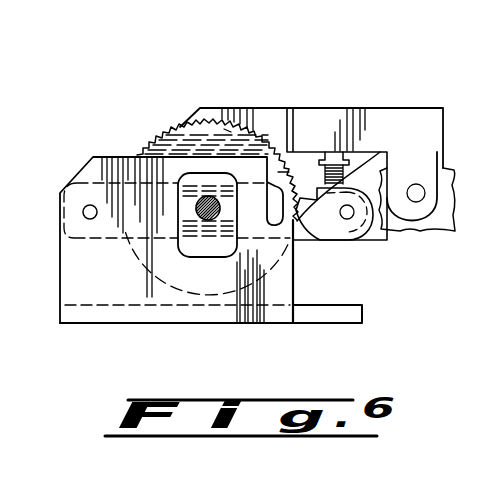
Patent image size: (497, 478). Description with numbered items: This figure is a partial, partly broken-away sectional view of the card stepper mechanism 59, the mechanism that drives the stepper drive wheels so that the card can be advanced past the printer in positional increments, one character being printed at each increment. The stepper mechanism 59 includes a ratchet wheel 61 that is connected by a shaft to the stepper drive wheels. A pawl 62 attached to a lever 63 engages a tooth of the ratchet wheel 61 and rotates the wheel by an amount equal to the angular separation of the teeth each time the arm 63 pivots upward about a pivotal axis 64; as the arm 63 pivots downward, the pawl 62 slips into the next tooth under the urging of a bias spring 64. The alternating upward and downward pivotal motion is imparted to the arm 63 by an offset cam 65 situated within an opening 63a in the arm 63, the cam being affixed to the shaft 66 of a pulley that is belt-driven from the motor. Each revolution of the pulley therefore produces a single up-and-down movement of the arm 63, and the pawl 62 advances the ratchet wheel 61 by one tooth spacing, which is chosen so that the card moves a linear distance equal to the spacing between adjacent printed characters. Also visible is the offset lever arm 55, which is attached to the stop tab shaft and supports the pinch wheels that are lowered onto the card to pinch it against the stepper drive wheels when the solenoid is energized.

The offset lever arm 55 is at (328, 122).
The stepper mechanism 59 is at (114, 119).
The ratchet wheel 61 is at (173, 133).
The pawl 62 is at (300, 200).
The lever 63 is at (354, 238).
The opening 63a is at (224, 129).
The pivotal axis 64 is at (88, 211).
The offset cam 65 is at (293, 263).
The shaft 66 is at (230, 132).